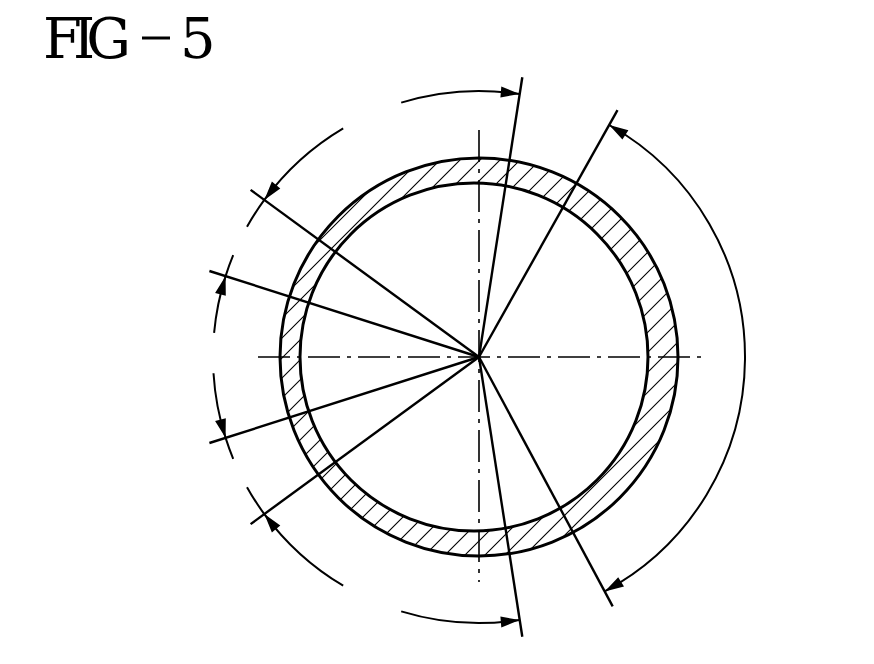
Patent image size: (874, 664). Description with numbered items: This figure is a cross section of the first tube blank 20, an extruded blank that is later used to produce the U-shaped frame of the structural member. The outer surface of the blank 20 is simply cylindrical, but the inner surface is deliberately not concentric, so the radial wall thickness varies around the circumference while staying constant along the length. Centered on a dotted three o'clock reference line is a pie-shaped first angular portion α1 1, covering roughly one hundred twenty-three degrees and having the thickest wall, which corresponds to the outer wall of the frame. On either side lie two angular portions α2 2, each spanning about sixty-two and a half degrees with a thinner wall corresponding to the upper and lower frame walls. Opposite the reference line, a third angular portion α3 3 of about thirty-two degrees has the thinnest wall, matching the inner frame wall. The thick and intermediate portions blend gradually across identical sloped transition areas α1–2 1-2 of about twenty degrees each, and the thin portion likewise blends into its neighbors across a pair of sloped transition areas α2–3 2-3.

The first tube blank 20 is at (703, 167).
The first angular portion α 1 is at (621, 358).
The second angular portions α 2 is at (387, 356).
The third angular portion α 3 is at (334, 357).
The sloped transition areas α1–2 1-2 is at (569, 359).
The sloped transition areas α2–3 2-3 is at (239, 357).